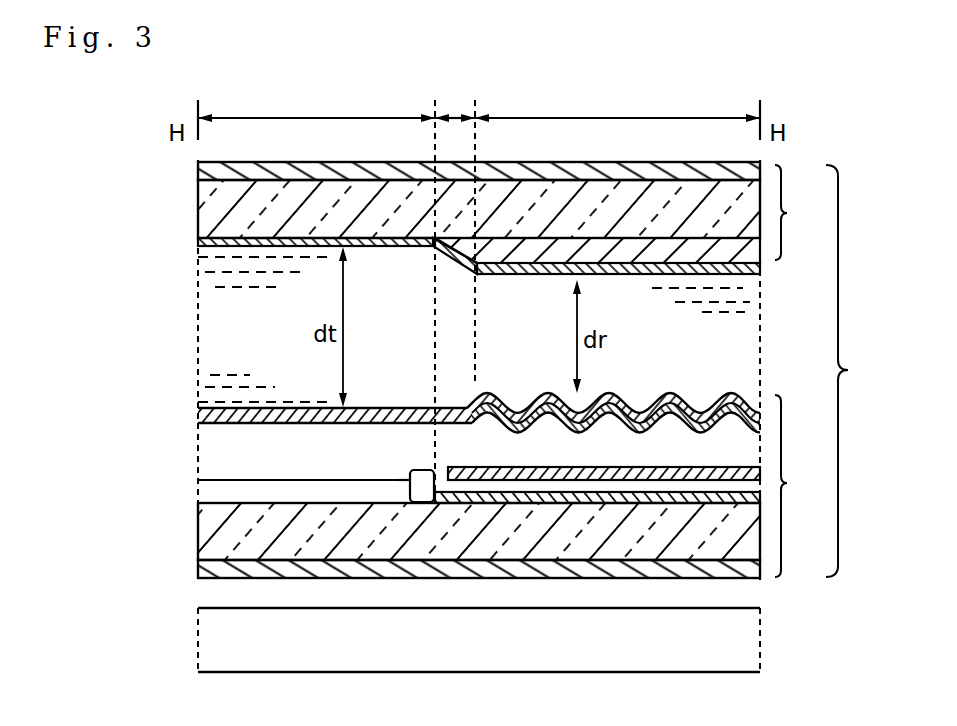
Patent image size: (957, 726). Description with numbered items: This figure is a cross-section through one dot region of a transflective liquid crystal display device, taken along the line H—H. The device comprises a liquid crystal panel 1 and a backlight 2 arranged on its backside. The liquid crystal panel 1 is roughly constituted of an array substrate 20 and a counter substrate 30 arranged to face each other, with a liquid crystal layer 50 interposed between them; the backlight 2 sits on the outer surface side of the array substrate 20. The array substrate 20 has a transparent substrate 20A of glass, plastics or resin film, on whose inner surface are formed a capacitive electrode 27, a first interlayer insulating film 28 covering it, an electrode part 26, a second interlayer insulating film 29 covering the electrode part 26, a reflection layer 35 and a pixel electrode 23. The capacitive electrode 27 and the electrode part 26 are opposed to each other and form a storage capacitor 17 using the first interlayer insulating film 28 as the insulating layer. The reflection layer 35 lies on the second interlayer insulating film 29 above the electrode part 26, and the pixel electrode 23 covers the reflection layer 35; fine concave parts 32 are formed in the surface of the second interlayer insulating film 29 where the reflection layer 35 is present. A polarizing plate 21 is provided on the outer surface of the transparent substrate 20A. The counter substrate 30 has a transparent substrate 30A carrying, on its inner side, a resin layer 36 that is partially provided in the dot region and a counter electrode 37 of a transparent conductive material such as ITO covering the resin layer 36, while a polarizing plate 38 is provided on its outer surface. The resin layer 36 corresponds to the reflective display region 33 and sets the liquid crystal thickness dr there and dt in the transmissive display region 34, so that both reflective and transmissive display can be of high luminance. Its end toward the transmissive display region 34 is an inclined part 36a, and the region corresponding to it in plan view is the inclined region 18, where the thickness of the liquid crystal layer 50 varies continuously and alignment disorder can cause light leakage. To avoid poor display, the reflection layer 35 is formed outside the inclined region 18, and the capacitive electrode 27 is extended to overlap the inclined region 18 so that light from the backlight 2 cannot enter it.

The liquid crystal panel 1 is at (855, 385).
The backlight 2 is at (745, 635).
The storage capacitor 17 is at (408, 482).
The inclined region 18 is at (455, 101).
The array substrate 20 is at (798, 486).
The transparent substrate 20A is at (198, 532).
The polarizing plate 21 is at (198, 571).
The pixel electrode 23 is at (198, 412).
The electrode part 26 is at (528, 466).
The capacitive electrode 27 is at (447, 497).
The first interlayer insulating film 28 is at (198, 491).
The second interlayer insulating film 29 is at (198, 452).
The counter substrate 30 is at (800, 212).
The transparent substrate 30A is at (198, 207).
The fine concave parts 32 is at (637, 414).
The reflective display region 33 is at (617, 103).
The transmissive display region 34 is at (316, 103).
The reflection layer 35 is at (548, 394).
The resin layer 36 is at (737, 263).
The inclined part 36a is at (455, 272).
The counter electrode 37 is at (198, 242).
The polarizing plate 38 is at (198, 170).
The liquid crystal layer 50 is at (207, 333).